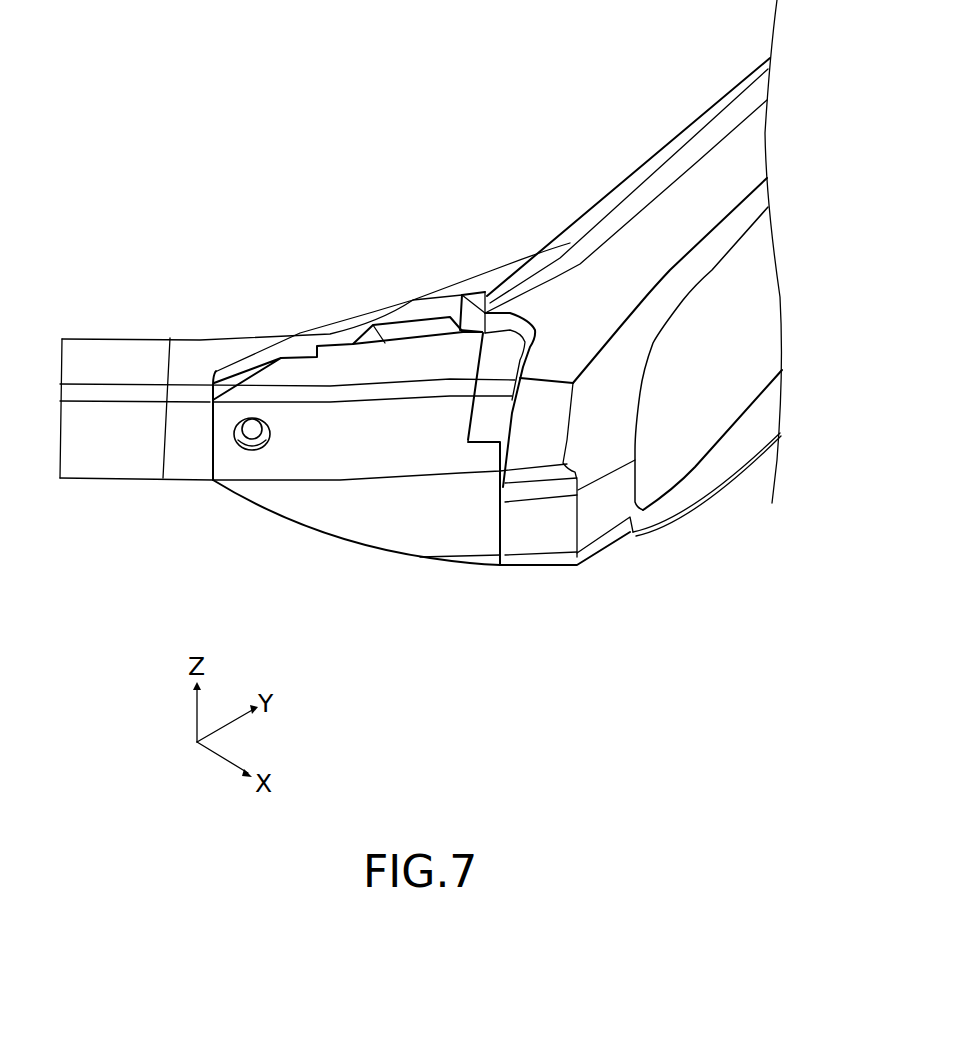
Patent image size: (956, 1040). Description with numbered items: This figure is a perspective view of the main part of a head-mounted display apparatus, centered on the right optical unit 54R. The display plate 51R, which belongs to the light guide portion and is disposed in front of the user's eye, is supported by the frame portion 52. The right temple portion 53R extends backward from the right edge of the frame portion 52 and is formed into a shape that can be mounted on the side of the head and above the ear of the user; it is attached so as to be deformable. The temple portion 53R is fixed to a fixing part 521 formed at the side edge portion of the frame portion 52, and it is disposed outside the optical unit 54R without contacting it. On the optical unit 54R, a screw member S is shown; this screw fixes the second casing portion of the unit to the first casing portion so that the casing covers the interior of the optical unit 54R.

The frame portion 52 is at (672, 168).
The fixing part 521 is at (535, 318).
The temple portion 53R is at (118, 345).
The optical unit 54R is at (370, 525).
The screw member S is at (249, 452).
The display plate 51R is at (695, 442).